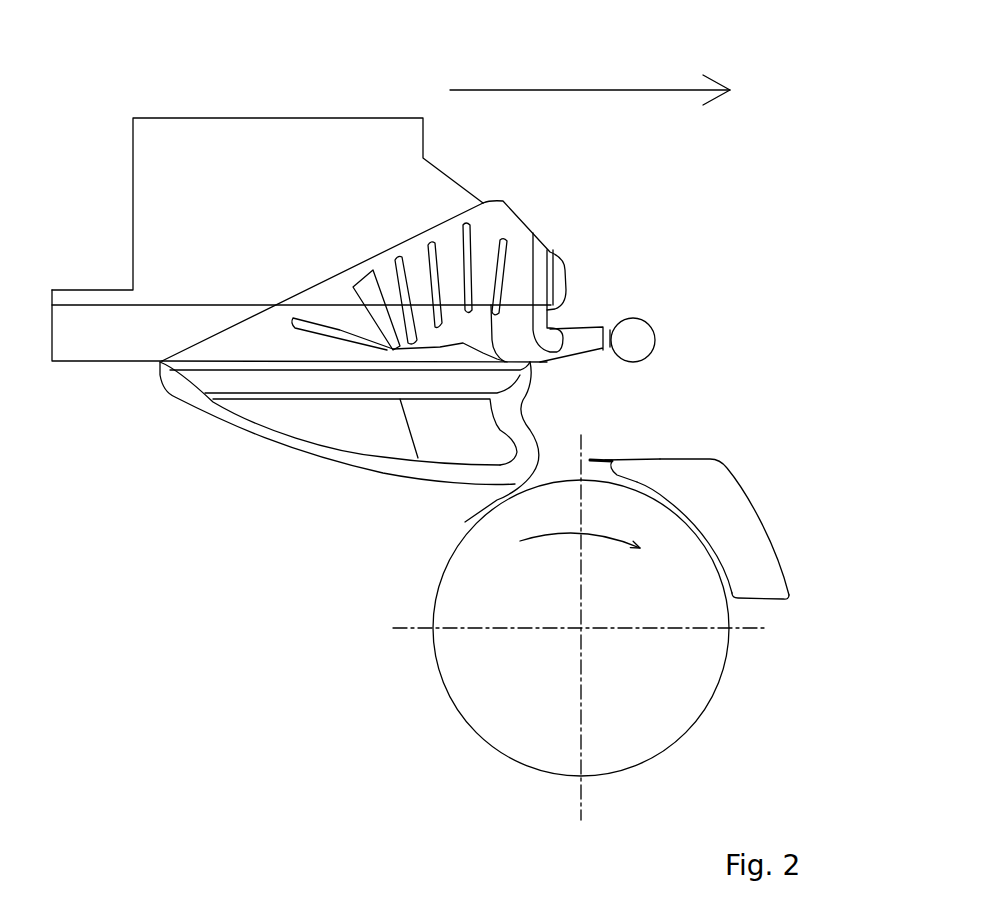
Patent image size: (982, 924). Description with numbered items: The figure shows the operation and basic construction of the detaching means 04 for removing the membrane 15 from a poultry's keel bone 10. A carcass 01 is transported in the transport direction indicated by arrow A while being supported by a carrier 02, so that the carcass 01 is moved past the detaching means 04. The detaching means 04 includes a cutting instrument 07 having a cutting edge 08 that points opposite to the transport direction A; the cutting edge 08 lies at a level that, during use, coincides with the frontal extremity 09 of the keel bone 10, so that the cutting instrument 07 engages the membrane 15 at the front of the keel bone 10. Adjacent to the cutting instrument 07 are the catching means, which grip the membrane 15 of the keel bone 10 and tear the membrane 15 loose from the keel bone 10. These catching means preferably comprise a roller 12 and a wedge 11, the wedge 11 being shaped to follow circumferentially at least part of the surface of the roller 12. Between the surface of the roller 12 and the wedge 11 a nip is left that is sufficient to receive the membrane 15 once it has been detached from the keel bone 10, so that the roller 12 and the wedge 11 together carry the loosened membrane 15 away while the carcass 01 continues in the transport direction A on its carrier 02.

The carrier 02 is at (236, 118).
The transport direction A is at (623, 80).
The carcass 01 is at (565, 265).
The cutting edge 08 is at (595, 457).
The cutting instrument 07 is at (625, 458).
The wedge 11 is at (747, 488).
The keel bone 10 is at (422, 437).
The membrane 15 is at (400, 478).
The frontal extremity 09 is at (530, 475).
The detaching means 04 is at (755, 667).
The roller 12 is at (698, 717).